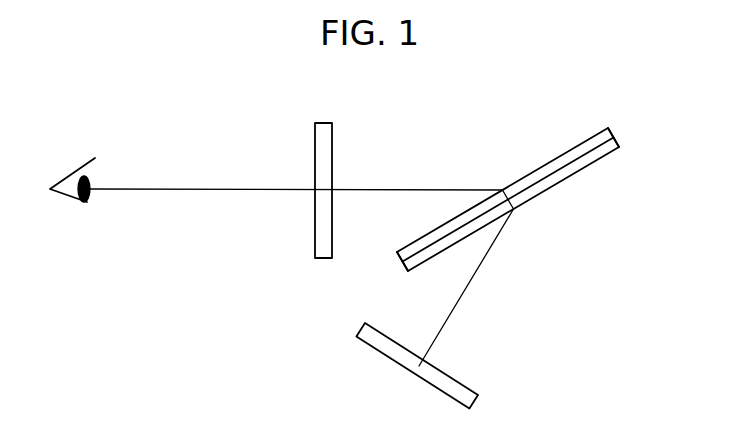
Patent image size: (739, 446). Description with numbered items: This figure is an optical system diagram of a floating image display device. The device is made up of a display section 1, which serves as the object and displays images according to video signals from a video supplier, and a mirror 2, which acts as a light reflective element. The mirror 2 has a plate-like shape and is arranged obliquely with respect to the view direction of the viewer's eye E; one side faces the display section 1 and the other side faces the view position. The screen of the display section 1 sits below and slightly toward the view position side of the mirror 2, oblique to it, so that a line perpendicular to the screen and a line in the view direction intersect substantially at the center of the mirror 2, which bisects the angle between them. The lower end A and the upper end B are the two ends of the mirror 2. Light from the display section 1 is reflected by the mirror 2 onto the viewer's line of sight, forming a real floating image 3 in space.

The display section 1 is at (470, 383).
The mirror 2 is at (583, 140).
The floating image 3 is at (323, 123).
The eye E is at (75, 177).
The end A of the mirror A is at (392, 275).
The end B of the mirror B is at (629, 130).